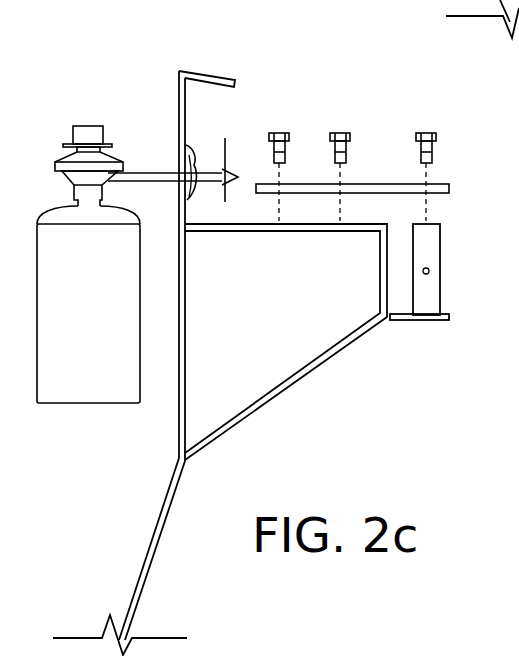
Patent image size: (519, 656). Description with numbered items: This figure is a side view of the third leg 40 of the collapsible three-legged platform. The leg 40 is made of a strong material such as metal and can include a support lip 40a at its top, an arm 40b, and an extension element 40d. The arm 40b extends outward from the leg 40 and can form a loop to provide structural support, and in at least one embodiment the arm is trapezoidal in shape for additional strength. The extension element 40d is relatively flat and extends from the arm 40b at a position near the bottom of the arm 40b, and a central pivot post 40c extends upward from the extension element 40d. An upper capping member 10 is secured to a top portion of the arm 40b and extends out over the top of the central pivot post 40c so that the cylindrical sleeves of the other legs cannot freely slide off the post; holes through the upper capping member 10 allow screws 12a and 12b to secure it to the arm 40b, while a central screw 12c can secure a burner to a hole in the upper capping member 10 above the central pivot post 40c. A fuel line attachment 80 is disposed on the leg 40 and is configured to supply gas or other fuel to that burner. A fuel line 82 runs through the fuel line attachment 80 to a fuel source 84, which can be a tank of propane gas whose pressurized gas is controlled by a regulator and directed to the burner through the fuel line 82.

The leg 40 is at (137, 443).
The support lip 40a is at (206, 71).
The arm 40b is at (291, 381).
The central pivot post 40c is at (442, 270).
The extension element 40d is at (403, 321).
The fuel line attachment 80 is at (188, 152).
The fuel line 82 is at (203, 165).
The fuel source 84 is at (104, 317).
The upper capping member 10 is at (447, 184).
The screw 12a is at (279, 132).
The screw 12b is at (340, 132).
The central screw 12c is at (426, 132).